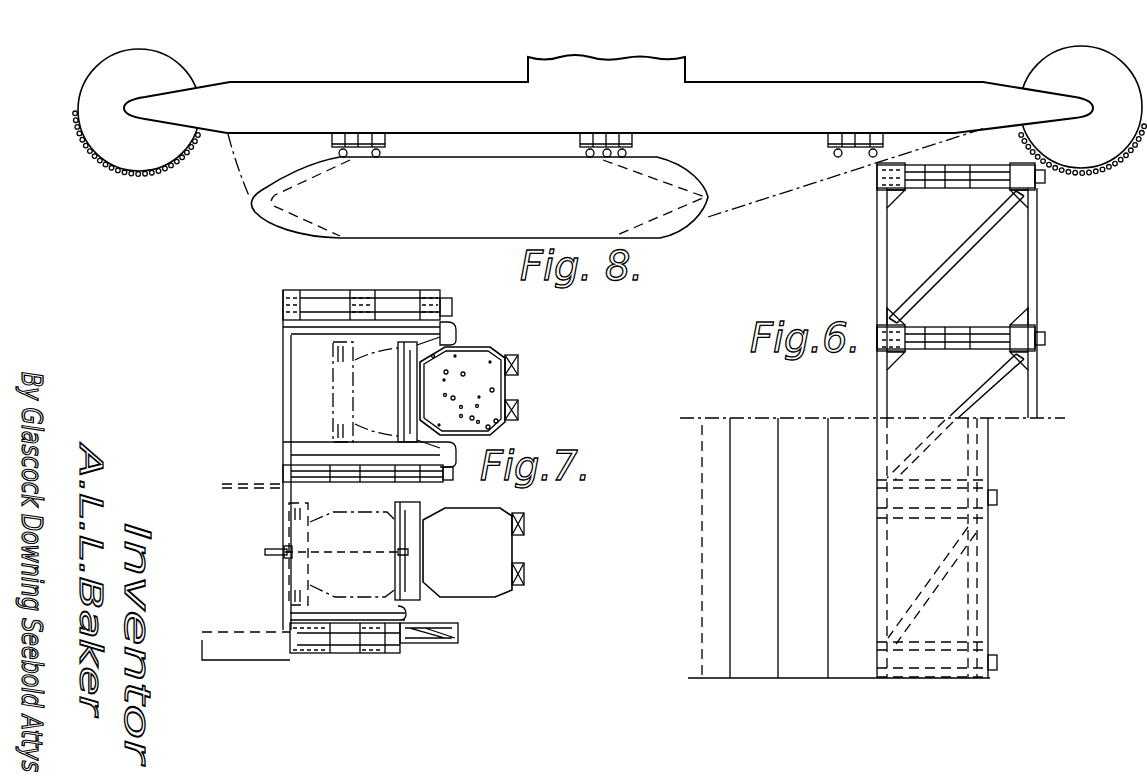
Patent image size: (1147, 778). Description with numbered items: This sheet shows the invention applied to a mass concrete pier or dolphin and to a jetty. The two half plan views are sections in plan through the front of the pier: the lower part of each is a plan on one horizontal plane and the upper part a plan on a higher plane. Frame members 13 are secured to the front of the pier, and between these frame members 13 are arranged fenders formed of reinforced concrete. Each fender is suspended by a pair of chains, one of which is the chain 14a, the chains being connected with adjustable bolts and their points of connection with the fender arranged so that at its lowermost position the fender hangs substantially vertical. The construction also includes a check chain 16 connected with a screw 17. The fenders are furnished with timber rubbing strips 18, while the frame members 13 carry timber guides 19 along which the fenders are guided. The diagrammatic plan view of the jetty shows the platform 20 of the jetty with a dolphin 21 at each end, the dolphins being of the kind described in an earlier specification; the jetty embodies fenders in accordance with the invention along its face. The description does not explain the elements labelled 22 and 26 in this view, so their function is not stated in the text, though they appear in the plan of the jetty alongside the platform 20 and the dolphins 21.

In FIG. 6, the frame member 13 is at (963, 183).
In FIG. 7, the chain 14a is at (440, 337).
In FIG. 7, the check chain 16 is at (378, 549).
In FIG. 7, the screw 17 is at (288, 553).
In FIG. 7, the timber rubbing strip 18 is at (514, 408).
In FIG. 7, the timber guide 19 is at (310, 333).
In FIG. 8, the platform 20 is at (682, 103).
In FIG. 8, the dolphin 21 is at (177, 80).
In FIG. 8, the bogie truck 22 is at (378, 158).
In FIG. 8, the rim rivets 26 is at (157, 173).